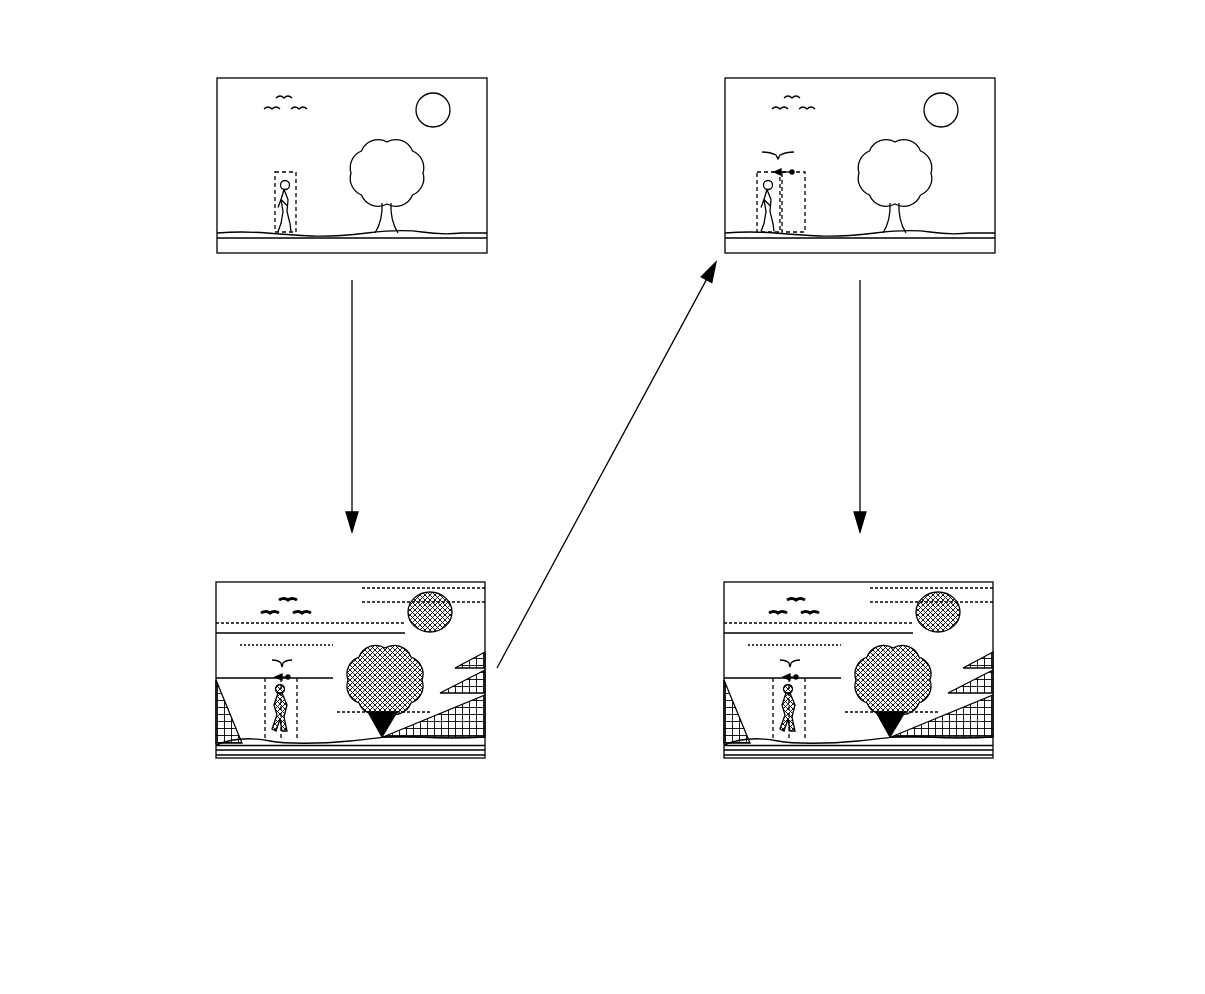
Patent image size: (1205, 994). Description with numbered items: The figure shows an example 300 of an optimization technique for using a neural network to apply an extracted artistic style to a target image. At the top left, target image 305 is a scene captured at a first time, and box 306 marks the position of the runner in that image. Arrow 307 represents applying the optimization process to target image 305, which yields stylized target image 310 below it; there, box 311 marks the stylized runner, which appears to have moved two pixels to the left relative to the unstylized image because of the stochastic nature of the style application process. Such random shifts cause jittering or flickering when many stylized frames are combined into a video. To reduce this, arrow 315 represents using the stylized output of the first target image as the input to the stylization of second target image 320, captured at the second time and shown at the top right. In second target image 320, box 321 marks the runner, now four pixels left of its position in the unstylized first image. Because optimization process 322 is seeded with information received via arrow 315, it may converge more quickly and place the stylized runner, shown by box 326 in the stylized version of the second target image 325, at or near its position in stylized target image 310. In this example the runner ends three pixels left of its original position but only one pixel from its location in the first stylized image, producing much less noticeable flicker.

The example of an optimization technique 300 is at (138, 96).
The target image 305 is at (285, 78).
The box 306 is at (289, 172).
The arrow 307 is at (353, 420).
The stylized target image 310 is at (298, 582).
The box 311 is at (268, 678).
The arrow 315 is at (606, 465).
The second target image 320 is at (793, 78).
The box 321 is at (769, 172).
The optimization process 322 is at (861, 420).
The stylized version of the second target image 325 is at (806, 582).
The box 326 is at (776, 678).